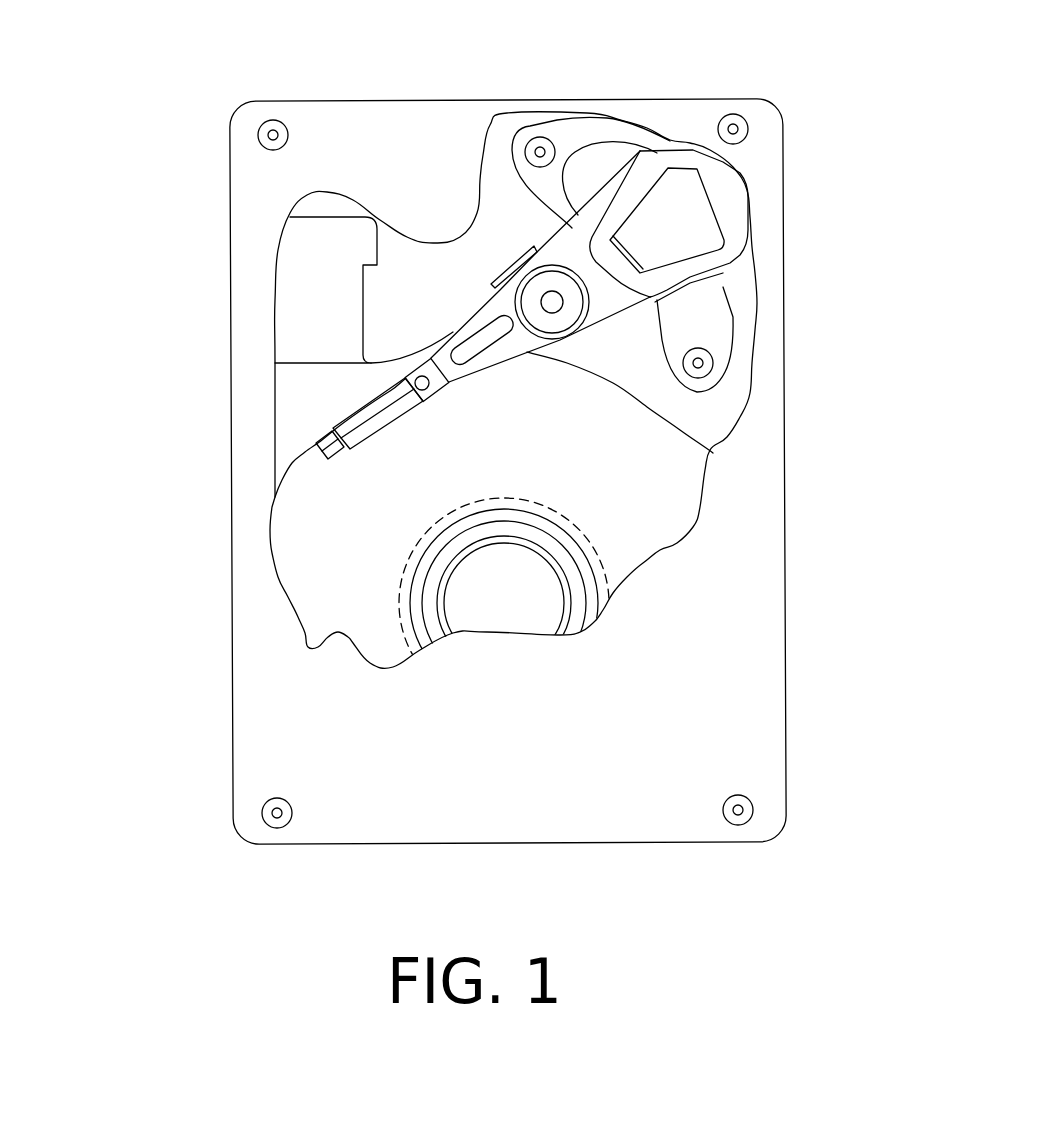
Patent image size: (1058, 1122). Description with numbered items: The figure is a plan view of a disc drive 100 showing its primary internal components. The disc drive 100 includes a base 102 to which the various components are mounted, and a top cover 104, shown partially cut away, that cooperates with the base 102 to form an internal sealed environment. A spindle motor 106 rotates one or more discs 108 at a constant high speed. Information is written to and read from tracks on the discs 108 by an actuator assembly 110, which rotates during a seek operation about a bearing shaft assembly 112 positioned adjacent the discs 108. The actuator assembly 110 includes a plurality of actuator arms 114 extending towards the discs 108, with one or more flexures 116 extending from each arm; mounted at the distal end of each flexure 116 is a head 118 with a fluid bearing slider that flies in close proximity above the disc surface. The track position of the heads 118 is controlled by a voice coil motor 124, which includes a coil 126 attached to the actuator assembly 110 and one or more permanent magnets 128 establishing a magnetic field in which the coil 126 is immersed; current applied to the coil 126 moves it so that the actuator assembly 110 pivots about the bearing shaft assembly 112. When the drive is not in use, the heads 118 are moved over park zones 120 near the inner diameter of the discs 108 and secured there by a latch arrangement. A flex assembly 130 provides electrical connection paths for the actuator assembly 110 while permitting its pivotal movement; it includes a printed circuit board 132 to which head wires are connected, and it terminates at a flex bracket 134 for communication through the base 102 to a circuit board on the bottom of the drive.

The disc drive 100 is at (185, 80).
The base 102 is at (287, 374).
The top cover 104 is at (292, 715).
The spindle motor 106 is at (500, 603).
The discs 108 is at (648, 532).
The actuator assembly 110 is at (612, 345).
The bearing shaft assembly 112 is at (553, 303).
The actuator arms 114 is at (489, 367).
The flexures 116 is at (357, 427).
The head 118 is at (323, 455).
The park zones 120 is at (397, 605).
The voice coil motor 124 is at (612, 155).
The coil 126 is at (735, 225).
The permanent magnets 128 is at (578, 180).
The flex assembly 130 is at (463, 308).
The printed circuit board 132 is at (520, 263).
The flex bracket 134 is at (310, 280).